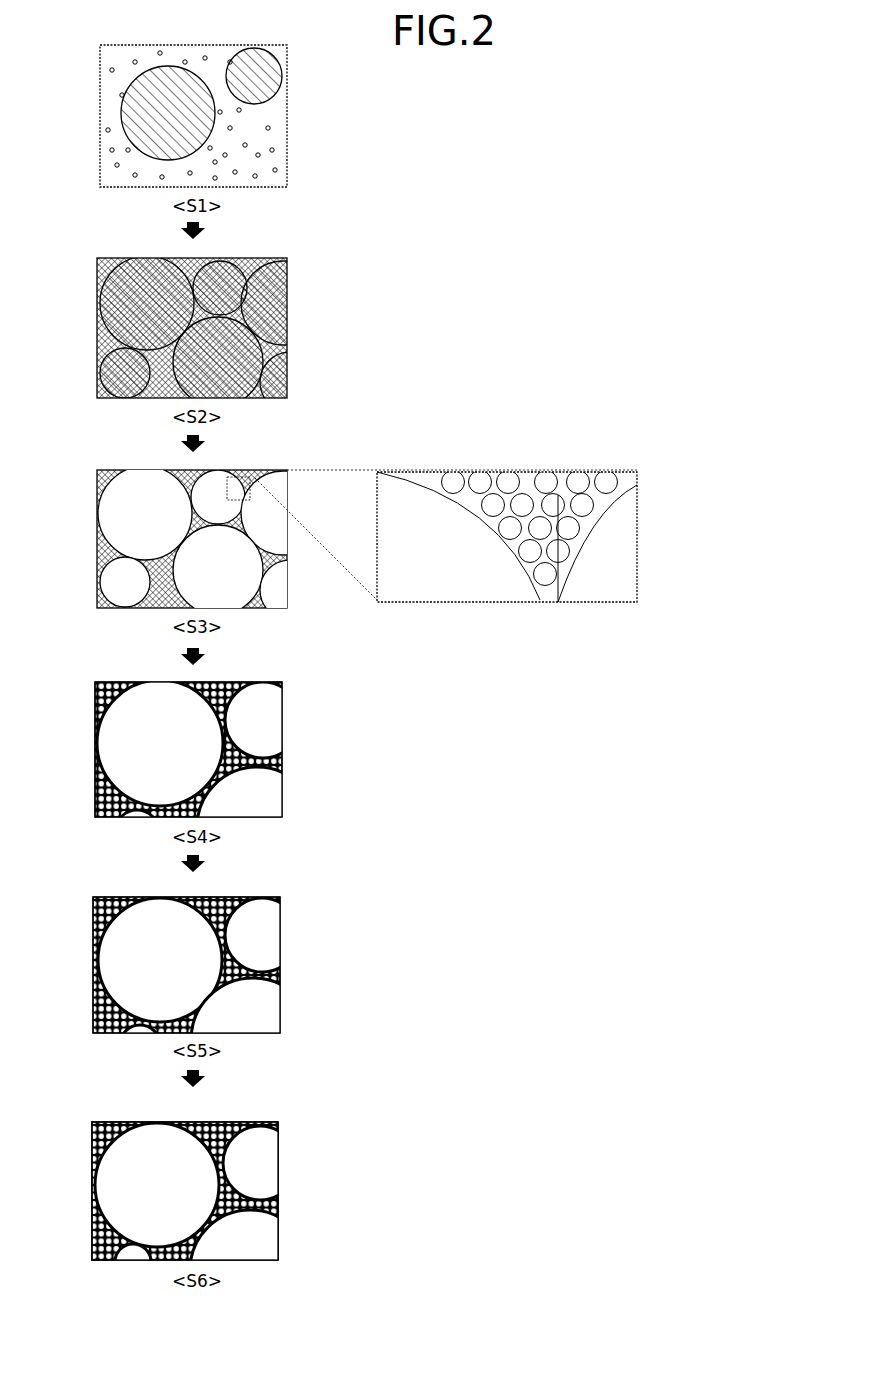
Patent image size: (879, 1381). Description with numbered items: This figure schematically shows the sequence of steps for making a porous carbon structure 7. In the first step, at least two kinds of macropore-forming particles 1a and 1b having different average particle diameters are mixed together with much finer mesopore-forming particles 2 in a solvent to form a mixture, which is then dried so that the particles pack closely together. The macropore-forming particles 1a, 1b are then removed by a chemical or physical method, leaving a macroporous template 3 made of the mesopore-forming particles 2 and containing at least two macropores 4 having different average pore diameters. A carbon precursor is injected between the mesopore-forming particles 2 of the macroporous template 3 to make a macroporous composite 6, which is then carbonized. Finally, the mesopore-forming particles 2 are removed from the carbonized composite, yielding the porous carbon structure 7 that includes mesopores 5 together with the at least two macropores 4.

The macropore-forming particles 1a is at (173, 75).
The macropore-forming particles 1b is at (258, 50).
The mesopore-forming particles 2 is at (113, 103).
The macroporous template 3 is at (113, 454).
The macropores 4 is at (115, 510).
The mesopores 5 is at (113, 1122).
The macroporous composite 6 is at (113, 666).
The porous carbon structure 7 is at (107, 1099).